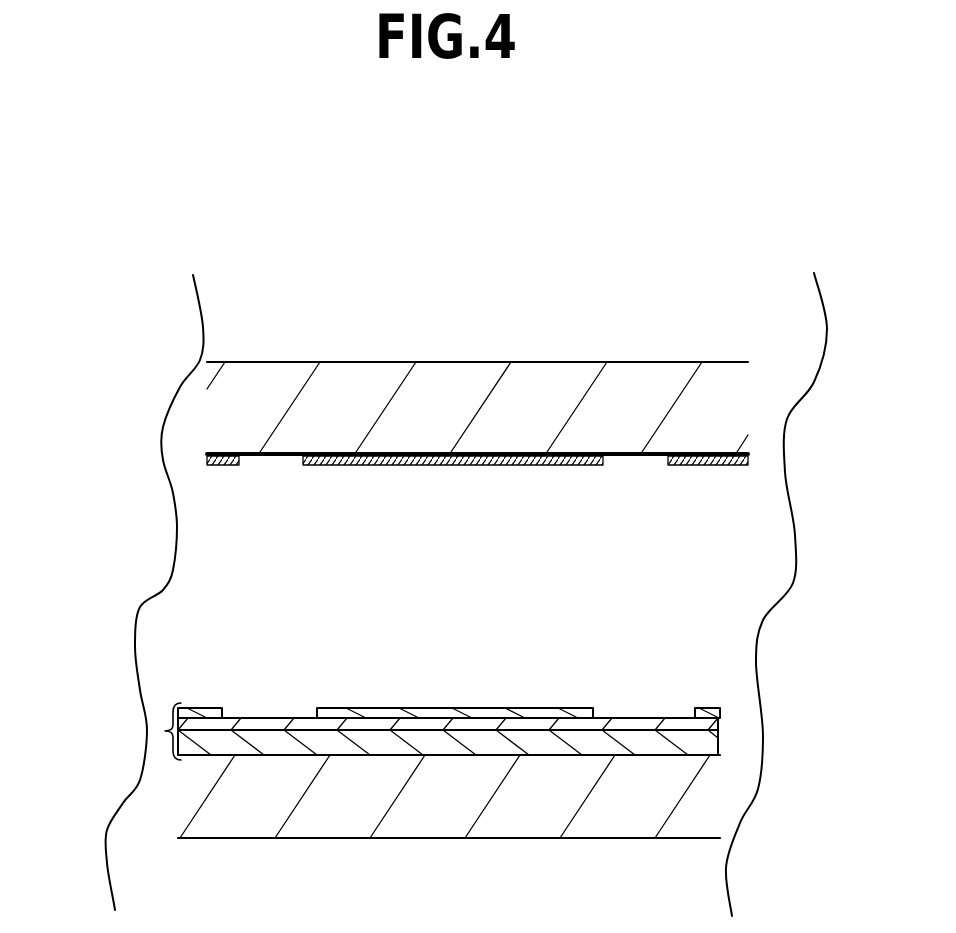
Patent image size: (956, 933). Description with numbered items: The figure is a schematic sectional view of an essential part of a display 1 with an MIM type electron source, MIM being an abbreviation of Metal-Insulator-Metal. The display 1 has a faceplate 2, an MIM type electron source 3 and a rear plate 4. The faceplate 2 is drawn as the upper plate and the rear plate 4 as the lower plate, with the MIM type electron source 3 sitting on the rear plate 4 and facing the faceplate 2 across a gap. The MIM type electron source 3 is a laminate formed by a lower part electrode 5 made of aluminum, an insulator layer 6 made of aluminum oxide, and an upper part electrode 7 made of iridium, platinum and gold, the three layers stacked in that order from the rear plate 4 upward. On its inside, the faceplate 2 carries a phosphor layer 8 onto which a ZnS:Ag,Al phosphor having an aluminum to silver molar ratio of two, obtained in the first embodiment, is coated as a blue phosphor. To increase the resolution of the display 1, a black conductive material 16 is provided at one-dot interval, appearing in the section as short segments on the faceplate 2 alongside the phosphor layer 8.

The display with MIM type electron source 1 is at (225, 227).
The faceplate 2 is at (490, 362).
The MIM type electron source 3 is at (172, 722).
The rear plate 4 is at (522, 818).
The lower part electrode 5 is at (706, 743).
The insulator layer 6 is at (686, 716).
The upper part electrode 7 is at (528, 708).
The phosphor layer 8 is at (473, 466).
The black conductive material 16 is at (263, 456).